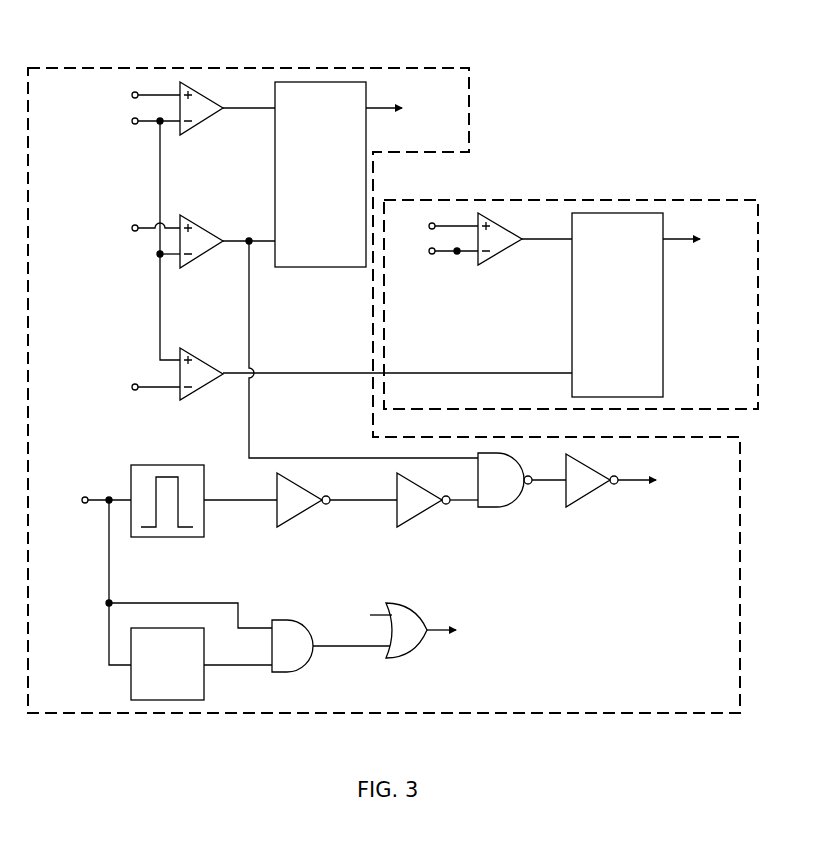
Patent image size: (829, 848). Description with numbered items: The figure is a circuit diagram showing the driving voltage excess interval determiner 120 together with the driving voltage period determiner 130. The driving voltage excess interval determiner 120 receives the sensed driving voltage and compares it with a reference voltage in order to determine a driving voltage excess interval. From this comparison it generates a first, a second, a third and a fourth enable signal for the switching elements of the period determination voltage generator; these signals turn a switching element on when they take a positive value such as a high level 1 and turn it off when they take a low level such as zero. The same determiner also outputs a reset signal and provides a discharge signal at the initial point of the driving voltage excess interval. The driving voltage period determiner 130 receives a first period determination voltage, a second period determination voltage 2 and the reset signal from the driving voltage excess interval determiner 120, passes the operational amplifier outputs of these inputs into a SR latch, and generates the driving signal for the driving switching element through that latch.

The driving voltage excess interval determiner 120 is at (247, 68).
The driving voltage period determiner 130 is at (568, 200).
The DCHG1 discharge signal output 1 is at (669, 480).
The VT2 input terminal 2 is at (435, 251).